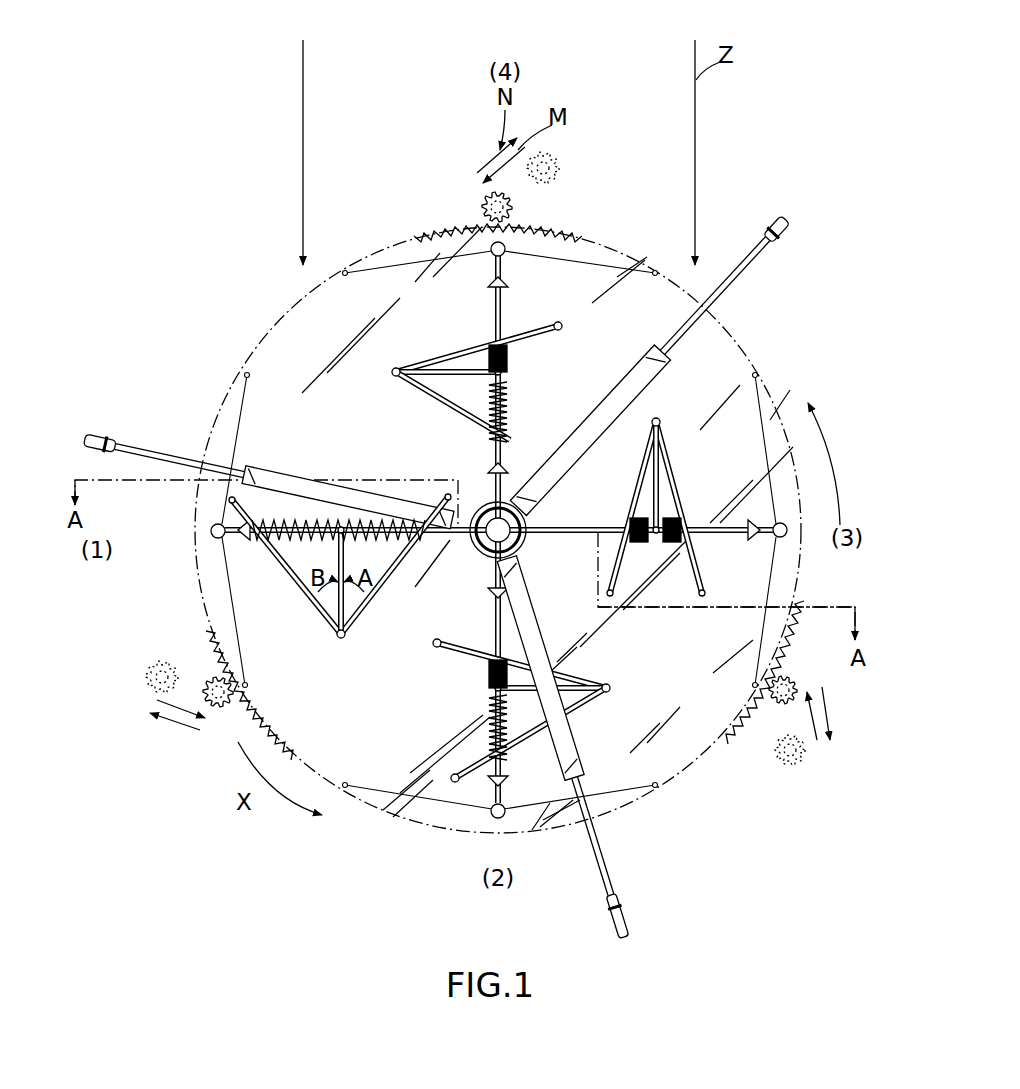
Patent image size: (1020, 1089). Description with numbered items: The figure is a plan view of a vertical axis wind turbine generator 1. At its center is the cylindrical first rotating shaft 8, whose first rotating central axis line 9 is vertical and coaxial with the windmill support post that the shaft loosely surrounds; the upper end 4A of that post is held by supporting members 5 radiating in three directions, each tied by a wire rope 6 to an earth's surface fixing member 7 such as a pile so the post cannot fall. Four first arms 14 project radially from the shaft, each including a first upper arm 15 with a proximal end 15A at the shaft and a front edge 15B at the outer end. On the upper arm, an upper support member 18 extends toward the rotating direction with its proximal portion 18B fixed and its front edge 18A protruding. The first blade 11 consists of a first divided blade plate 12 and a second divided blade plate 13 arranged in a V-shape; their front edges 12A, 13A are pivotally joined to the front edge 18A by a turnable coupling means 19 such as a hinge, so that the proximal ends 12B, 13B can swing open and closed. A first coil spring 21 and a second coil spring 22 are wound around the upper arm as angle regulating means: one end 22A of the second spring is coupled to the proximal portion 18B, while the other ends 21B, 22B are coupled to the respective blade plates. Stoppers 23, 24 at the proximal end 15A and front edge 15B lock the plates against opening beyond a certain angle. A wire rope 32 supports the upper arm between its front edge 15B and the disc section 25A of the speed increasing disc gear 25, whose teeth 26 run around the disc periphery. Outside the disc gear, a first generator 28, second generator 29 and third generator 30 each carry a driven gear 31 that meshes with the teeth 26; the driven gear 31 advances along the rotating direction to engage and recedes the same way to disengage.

The vertical axis wind turbine generator 1 is at (732, 212).
The upper end 4A is at (528, 543).
The supporting member 5 is at (575, 743).
The wire rope 6 is at (590, 837).
The earth's surface fixing member 7 is at (623, 940).
The first rotating shaft 8 is at (522, 535).
The first rotating central axis line 9 is at (504, 528).
The first blade 11 is at (262, 593).
The first divided blade plate 12 is at (290, 578).
The front edge 12A is at (337, 640).
The proximal end 12B is at (240, 517).
The second divided blade plate 13 is at (348, 640).
The front edge 13A is at (349, 643).
The proximal end 13B is at (446, 497).
The first arm 14 is at (450, 540).
The first upper arm 15 is at (432, 563).
The proximal end 15A is at (480, 540).
The front edge 15B is at (233, 537).
The upper support member 18 is at (338, 600).
The front edge 18A is at (343, 650).
The proximal portion 18B is at (343, 523).
The turnable coupling means 19 is at (343, 653).
The first coil spring 21 is at (353, 520).
The other end 21B is at (410, 520).
The second coil spring 22 is at (285, 522).
The one end 22A is at (336, 520).
The other end 22B is at (233, 482).
The stopper 23 is at (413, 567).
The stopper 24 is at (256, 537).
The speed increasing disc gear 25 is at (745, 612).
The disc section 25A is at (672, 645).
The teeth 26 is at (780, 662).
The first generator 28 is at (485, 200).
The second generator 29 is at (217, 710).
The third generator 30 is at (800, 692).
The driven gear 31 is at (798, 678).
The wire rope 32 is at (240, 390).